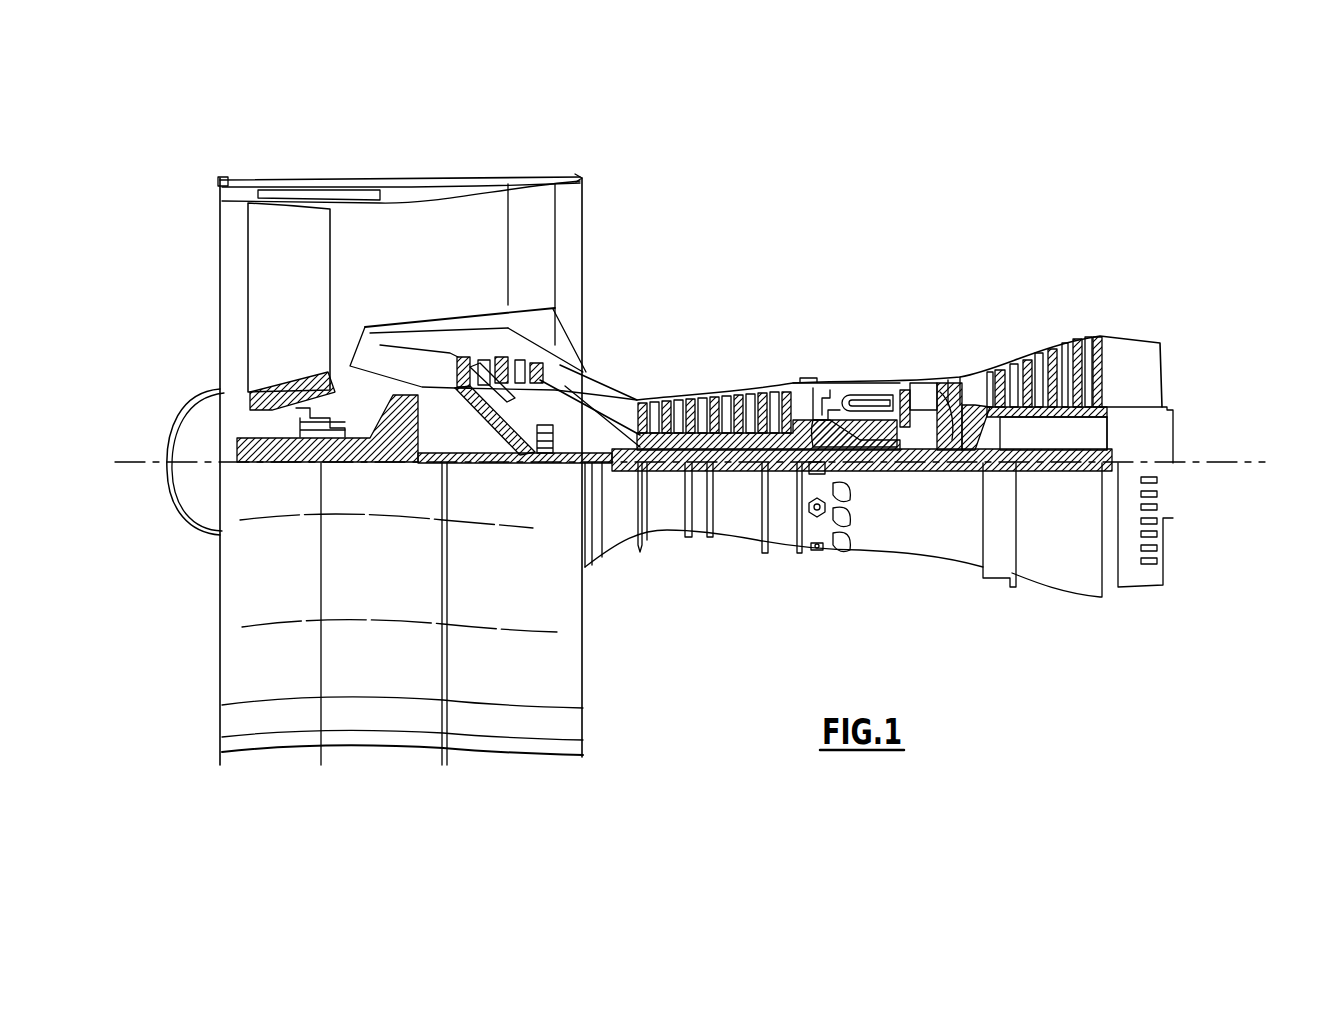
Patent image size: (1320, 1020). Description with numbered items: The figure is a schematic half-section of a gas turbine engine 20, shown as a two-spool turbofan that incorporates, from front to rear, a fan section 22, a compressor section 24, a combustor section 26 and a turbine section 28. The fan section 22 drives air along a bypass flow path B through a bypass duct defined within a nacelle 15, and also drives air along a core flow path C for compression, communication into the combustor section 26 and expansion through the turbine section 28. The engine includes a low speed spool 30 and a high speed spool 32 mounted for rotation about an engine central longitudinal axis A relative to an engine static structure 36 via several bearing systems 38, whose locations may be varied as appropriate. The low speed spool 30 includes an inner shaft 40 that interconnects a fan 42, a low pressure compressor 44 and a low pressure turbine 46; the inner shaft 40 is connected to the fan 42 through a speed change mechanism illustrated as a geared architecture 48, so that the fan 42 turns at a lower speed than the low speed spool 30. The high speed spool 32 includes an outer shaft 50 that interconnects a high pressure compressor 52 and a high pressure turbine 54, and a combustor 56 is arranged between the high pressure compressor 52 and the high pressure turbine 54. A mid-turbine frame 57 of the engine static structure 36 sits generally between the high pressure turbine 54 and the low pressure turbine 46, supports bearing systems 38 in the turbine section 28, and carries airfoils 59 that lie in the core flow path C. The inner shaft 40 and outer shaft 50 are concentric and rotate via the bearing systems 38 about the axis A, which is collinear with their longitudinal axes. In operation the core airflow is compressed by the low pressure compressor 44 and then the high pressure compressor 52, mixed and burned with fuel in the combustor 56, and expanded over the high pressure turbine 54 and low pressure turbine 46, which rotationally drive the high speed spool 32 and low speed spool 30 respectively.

The nacelle 15 is at (403, 180).
The gas turbine engine 20 is at (862, 230).
The fan section 22 is at (336, 172).
The compressor section 24 is at (630, 374).
The combustor section 26 is at (855, 360).
The turbine section 28 is at (1002, 324).
The low speed spool 30 is at (740, 466).
The high speed spool 32 is at (782, 420).
The engine static structure 36 is at (780, 548).
The bearing systems 38 is at (537, 447).
The inner shaft 40 is at (598, 475).
The fan 42 is at (306, 310).
The low pressure compressor 44 is at (500, 375).
The low pressure turbine 46 is at (1048, 347).
The geared architecture 48 is at (408, 445).
The outer shaft 50 is at (862, 450).
The high pressure compressor 52 is at (712, 430).
The high pressure turbine 54 is at (920, 382).
The combustor 56 is at (856, 405).
The mid-turbine frame 57 is at (961, 370).
The airfoils 59 is at (975, 400).
The engine central longitudinal axis A is at (1257, 462).
The bypass flow path B is at (370, 253).
The core flow path C is at (408, 364).